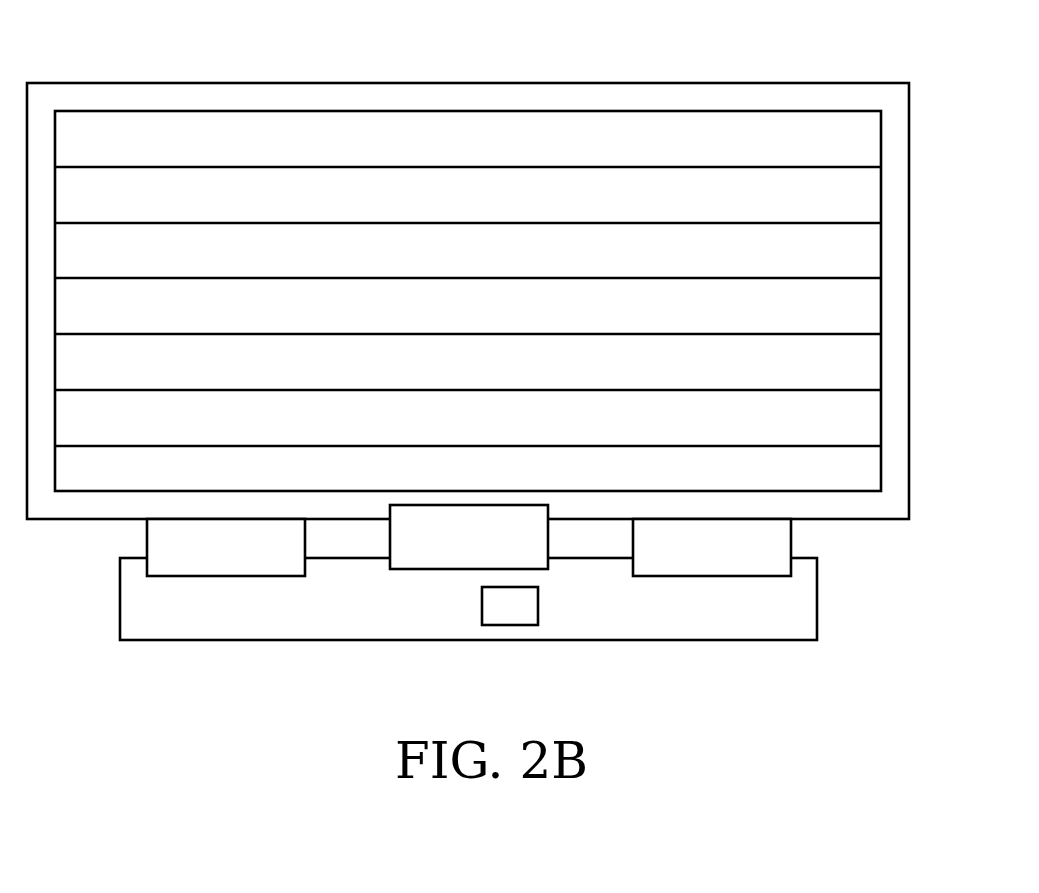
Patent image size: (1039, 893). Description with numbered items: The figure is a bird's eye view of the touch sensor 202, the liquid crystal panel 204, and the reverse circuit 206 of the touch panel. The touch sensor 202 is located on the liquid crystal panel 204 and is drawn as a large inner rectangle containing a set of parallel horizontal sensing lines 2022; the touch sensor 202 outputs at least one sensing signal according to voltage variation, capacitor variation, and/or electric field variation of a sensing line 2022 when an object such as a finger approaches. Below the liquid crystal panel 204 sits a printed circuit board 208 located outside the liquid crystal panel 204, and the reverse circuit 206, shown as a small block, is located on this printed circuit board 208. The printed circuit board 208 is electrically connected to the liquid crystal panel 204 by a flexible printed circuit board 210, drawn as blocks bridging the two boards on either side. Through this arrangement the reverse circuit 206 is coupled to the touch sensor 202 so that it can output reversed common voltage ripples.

The liquid crystal panel 204 is at (810, 95).
The touch sensor 202 is at (882, 302).
The sensing line 2022 is at (850, 222).
The printed circuit board 208 is at (763, 642).
The flexible printed circuit board 210 is at (160, 548).
The reverse circuit 206 is at (512, 606).